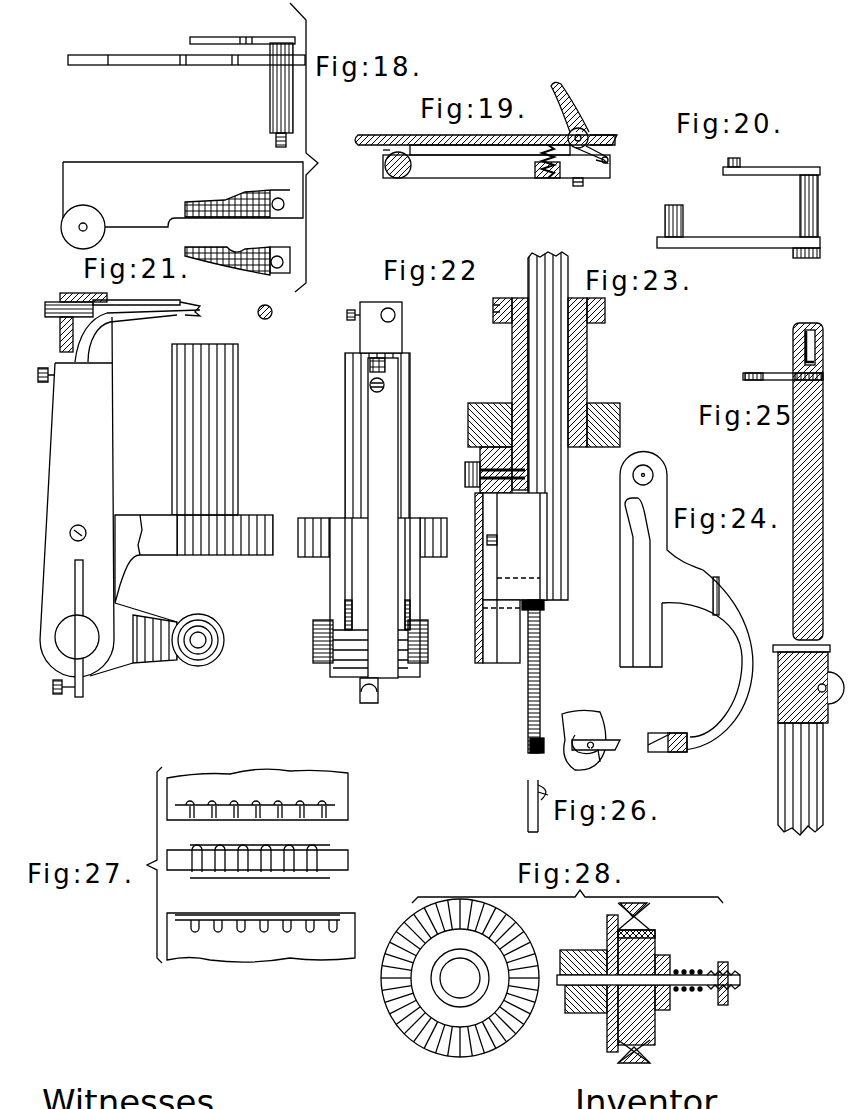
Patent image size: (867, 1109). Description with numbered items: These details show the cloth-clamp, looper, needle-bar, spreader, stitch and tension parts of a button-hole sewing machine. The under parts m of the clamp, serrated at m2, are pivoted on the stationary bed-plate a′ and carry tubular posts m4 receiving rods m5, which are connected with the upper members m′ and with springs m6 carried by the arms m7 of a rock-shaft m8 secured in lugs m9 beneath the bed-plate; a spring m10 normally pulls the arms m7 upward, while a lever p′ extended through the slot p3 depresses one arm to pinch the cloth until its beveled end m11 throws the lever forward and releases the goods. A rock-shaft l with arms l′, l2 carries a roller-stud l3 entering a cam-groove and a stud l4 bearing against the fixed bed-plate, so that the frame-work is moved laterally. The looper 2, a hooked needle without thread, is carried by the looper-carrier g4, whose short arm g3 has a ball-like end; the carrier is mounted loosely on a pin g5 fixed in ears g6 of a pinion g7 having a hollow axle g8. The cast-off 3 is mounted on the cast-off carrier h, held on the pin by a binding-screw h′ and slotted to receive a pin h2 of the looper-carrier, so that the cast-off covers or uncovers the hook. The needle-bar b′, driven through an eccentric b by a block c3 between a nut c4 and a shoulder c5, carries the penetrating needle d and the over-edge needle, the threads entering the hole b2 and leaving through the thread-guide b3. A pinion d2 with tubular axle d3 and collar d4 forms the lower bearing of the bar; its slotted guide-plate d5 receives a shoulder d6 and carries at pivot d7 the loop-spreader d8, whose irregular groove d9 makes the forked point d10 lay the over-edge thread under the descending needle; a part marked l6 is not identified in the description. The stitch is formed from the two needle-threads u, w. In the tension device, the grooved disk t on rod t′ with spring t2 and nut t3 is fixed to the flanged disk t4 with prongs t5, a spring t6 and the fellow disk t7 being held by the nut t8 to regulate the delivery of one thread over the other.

In FIG. 18, the lower clamp member m is at (224, 66).
In FIG. 18, the upper clamp member m′ is at (228, 37).
In FIG. 18, the serrations m2 is at (232, 218).
In FIG. 18, the tubular hollow post m4 is at (270, 106).
In FIG. 18, the rod m5 is at (276, 140).
In FIG. 19, the bed-plate a′ is at (486, 129).
In FIG. 19, the arm m7 is at (496, 161).
In FIG. 19, the rock-shaft m8 is at (395, 176).
In FIG. 19, the lugs or ears m9 is at (384, 155).
In FIG. 19, the spring m10 is at (532, 161).
In FIG. 19, the beveled end m11 is at (640, 157).
In FIG. 19, the spring m6 is at (585, 182).
In FIG. 19, the lever p′ is at (579, 122).
In FIG. 19, the slot p3 is at (602, 140).
In FIG. 20, the rock-shaft l is at (803, 206).
In FIG. 20, the arm l′ is at (771, 160).
In FIG. 20, the lower arm l2 is at (738, 254).
In FIG. 20, the roller-stud l3 is at (684, 209).
In FIG. 20, the stud l4 is at (727, 161).
In FIG. 21, the looper 2 is at (195, 303).
In FIG. 22, the looper 2 is at (396, 315).
In FIG. 21, the cast-off 3 is at (137, 314).
In FIG. 22, the cast-off 3 is at (387, 365).
In FIG. 21, the short arm g3 is at (157, 646).
In FIG. 21, the looper-carrier g4 is at (60, 335).
In FIG. 22, the looper-carrier g4 is at (360, 340).
In FIG. 21, the pin g5 is at (77, 628).
In FIG. 22, the pin g5 is at (313, 640).
In FIG. 21, the ears g6 is at (146, 559).
In FIG. 22, the ears g6 is at (428, 565).
In FIG. 21, the pinion g7 is at (228, 524).
In FIG. 22, the pinion g7 is at (415, 520).
In FIG. 21, the hollow axle g8 is at (238, 440).
In FIG. 22, the hollow axle g8 is at (345, 450).
In FIG. 21, the cast-off carrier h is at (76, 497).
In FIG. 22, the cast-off carrier h is at (385, 460).
In FIG. 21, the binding-screw h′ is at (52, 687).
In FIG. 22, the binding-screw h′ is at (360, 690).
In FIG. 21, the pin h2 is at (80, 526).
In FIG. 23, the eccentric b is at (555, 418).
In FIG. 25, the needle-bar b′ is at (793, 472).
In FIG. 25, the central hole b2 is at (810, 323).
In FIG. 25, the thread-guide b3 is at (750, 373).
In FIG. 25, the block c3 is at (778, 714).
In FIG. 25, the nut or washer c4 is at (785, 645).
In FIG. 25, the shoulder c5 is at (790, 779).
In FIG. 23, the cloth-penetrating needle d is at (540, 700).
In FIG. 23, the pinion d2 is at (472, 404).
In FIG. 23, the tubular axle d3 is at (588, 412).
In FIG. 26, the tubular axle d3 is at (524, 807).
In FIG. 23, the collar d4 is at (492, 333).
In FIG. 23, the slotted guide-plate d5 is at (511, 662).
In FIG. 23, the shoulder d6 is at (515, 546).
In FIG. 23, the pivot d7 is at (486, 470).
In FIG. 23, the loop-spreader d8 is at (478, 660).
In FIG. 24, the loop-spreader d8 is at (611, 764).
In FIG. 24, the irregular groove d9 is at (637, 557).
In FIG. 23, the forked point d10 is at (528, 748).
In FIG. 26, the forked point d10 is at (552, 787).
In FIG. 24, the forked point d10 is at (663, 752).
In FIG. 23, the pin l6 is at (498, 540).
In FIG. 27, the needle-thread u is at (335, 808).
In FIG. 27, the needle-thread w is at (274, 866).
In FIG. 28, the tension disk t is at (606, 929).
In FIG. 28, the rod t′ is at (656, 969).
In FIG. 28, the spring t2 is at (696, 971).
In FIG. 28, the nut t3 is at (729, 998).
In FIG. 28, the flanged disk t4 is at (634, 972).
In FIG. 28, the prongs t5 is at (645, 925).
In FIG. 28, the spring t6 is at (600, 1013).
In FIG. 28, the fellow disk t7 is at (527, 978).
In FIG. 28, the nut t8 is at (671, 993).